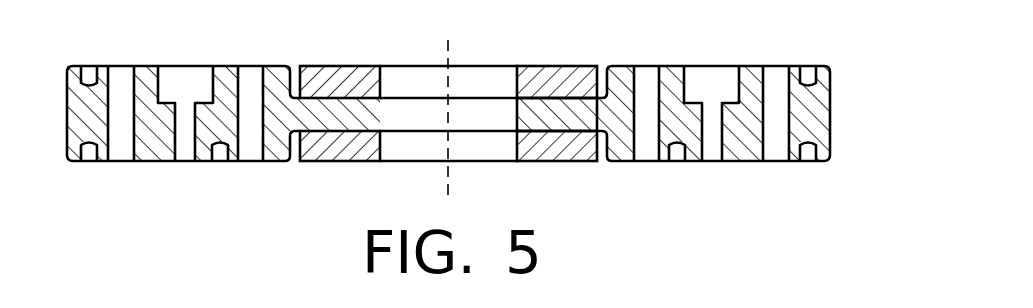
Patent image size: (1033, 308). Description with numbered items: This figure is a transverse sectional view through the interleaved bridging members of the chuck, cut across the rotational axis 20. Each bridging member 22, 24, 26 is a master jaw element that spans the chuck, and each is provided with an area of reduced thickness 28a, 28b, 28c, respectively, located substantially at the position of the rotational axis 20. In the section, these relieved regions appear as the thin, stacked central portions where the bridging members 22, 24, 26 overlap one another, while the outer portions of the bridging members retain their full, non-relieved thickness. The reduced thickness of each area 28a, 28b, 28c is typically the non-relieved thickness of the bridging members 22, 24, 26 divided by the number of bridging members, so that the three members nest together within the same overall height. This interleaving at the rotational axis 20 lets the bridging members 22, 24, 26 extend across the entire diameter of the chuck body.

The rotational axis 20 is at (460, 67).
The bridging member 22 is at (337, 66).
The bridging member 24 is at (832, 127).
The bridging member 26 is at (330, 158).
The area of reduced thickness 28a is at (572, 67).
The area of reduced thickness 28b is at (572, 120).
The area of reduced thickness 28c is at (550, 152).